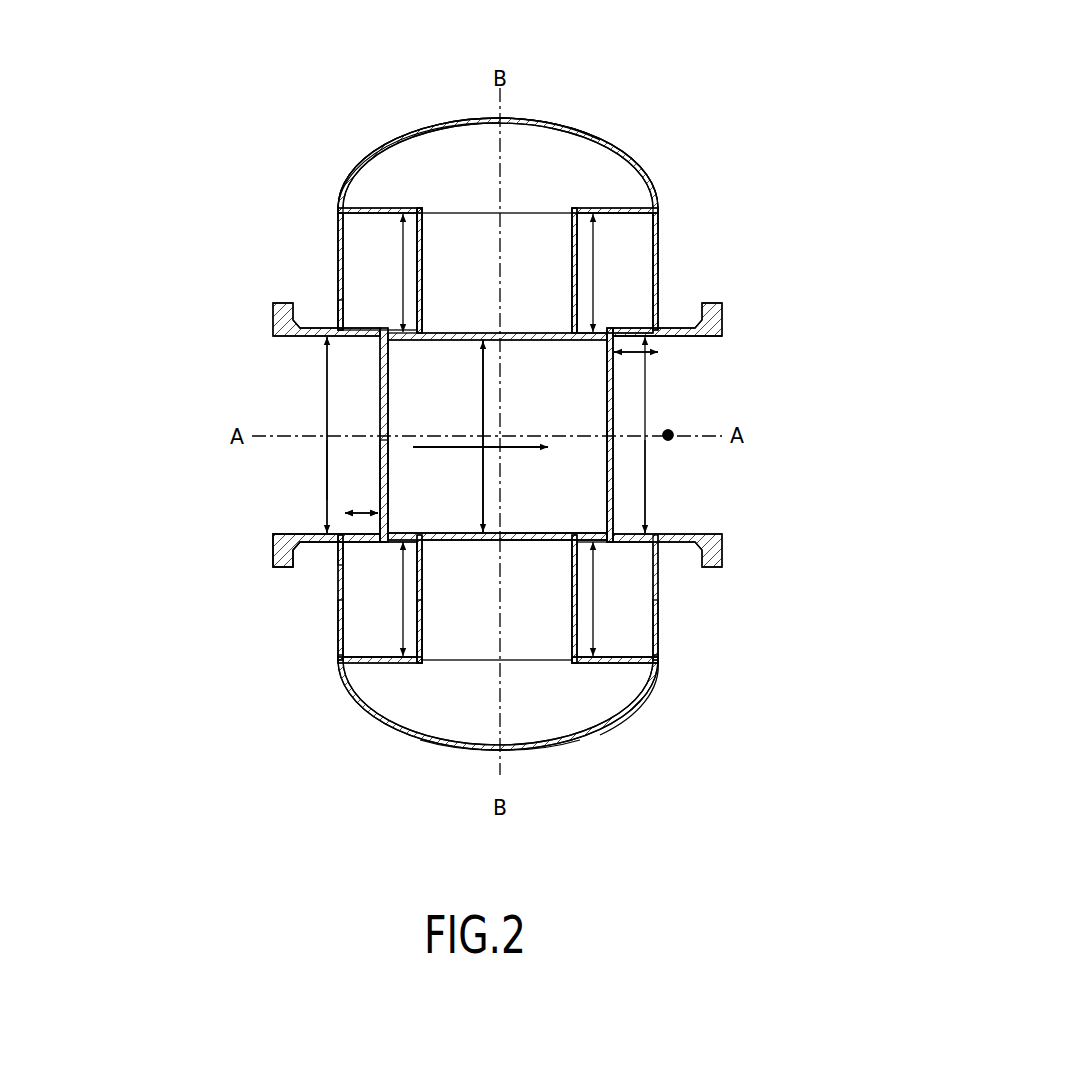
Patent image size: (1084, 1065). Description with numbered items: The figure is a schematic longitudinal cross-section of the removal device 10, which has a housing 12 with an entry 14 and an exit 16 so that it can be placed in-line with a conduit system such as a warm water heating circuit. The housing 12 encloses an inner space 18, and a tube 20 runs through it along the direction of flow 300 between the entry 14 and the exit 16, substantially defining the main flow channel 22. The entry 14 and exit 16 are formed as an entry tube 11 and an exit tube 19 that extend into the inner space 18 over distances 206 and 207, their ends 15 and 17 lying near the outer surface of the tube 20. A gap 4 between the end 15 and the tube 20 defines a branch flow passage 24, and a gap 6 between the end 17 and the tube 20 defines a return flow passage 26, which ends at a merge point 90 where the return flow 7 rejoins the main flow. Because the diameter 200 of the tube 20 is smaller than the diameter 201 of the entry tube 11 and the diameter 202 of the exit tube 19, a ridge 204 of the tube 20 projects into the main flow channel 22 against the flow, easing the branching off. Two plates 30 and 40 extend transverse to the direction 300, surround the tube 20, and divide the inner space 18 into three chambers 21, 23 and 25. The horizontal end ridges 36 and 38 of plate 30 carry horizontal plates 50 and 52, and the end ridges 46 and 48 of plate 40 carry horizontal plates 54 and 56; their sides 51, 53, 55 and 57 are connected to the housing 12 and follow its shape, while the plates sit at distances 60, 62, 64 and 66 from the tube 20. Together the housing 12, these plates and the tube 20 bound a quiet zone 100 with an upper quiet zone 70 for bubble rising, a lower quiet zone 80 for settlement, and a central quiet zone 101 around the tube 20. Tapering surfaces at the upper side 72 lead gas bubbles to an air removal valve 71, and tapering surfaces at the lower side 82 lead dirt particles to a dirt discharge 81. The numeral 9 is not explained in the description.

The removal device 10 is at (637, 130).
The housing 12 is at (346, 207).
The entry 14 is at (215, 407).
The exit 16 is at (800, 422).
The gap 4 is at (390, 412).
The gap 6 is at (607, 412).
The return flow 7 is at (385, 615).
The upper right annular pocket 9 is at (625, 253).
The entry tube 11 is at (315, 535).
The end of entry tube 15 is at (380, 388).
The end of exit tube 17 is at (613, 375).
The inner space 18 is at (475, 301).
The exit tube 19 is at (660, 350).
The tube 20 is at (600, 652).
The chamber 21 is at (388, 311).
The main flow channel 22 is at (468, 506).
The chamber 23 is at (473, 628).
The branch flow passage 24 is at (338, 322).
The chamber 25 is at (633, 588).
The return flow passage 26 is at (610, 325).
The plate 30 is at (405, 207).
The horizontal end ridge 36 is at (422, 207).
The horizontal end ridge 38 is at (422, 665).
The plate 40 is at (652, 662).
The horizontal end ridge 46 is at (572, 207).
The horizontal end ridge 48 is at (523, 541).
The horizontal plate 50 is at (340, 213).
The side of horizontal plate 51 is at (338, 202).
The horizontal plate 52 is at (381, 663).
The side of horizontal plate 53 is at (337, 665).
The horizontal plate 54 is at (620, 240).
The side of horizontal plate 55 is at (659, 212).
The horizontal plate 56 is at (593, 662).
The side of horizontal plate 57 is at (665, 670).
The distance 60 is at (415, 272).
The distance 62 is at (400, 622).
The distance 64 is at (600, 275).
The distance 66 is at (578, 598).
The upper quiet zone 70 is at (480, 178).
The air removal valve 71 is at (510, 118).
The upper side 72 is at (449, 123).
The lower quiet zone 80 is at (478, 726).
The dirt discharge 81 is at (483, 753).
The lower side 82 is at (533, 750).
The merge point 90 is at (670, 438).
The quiet zone 100 is at (551, 253).
The central quiet zone 101 is at (551, 658).
The diameter of tube 200 is at (380, 370).
The diameter of entry tube 201 is at (330, 468).
The diameter of exit tube 202 is at (615, 485).
The ridge 204 is at (380, 487).
The distance 206 is at (357, 518).
The distance 207 is at (680, 388).
The direction of flow 300 is at (480, 461).